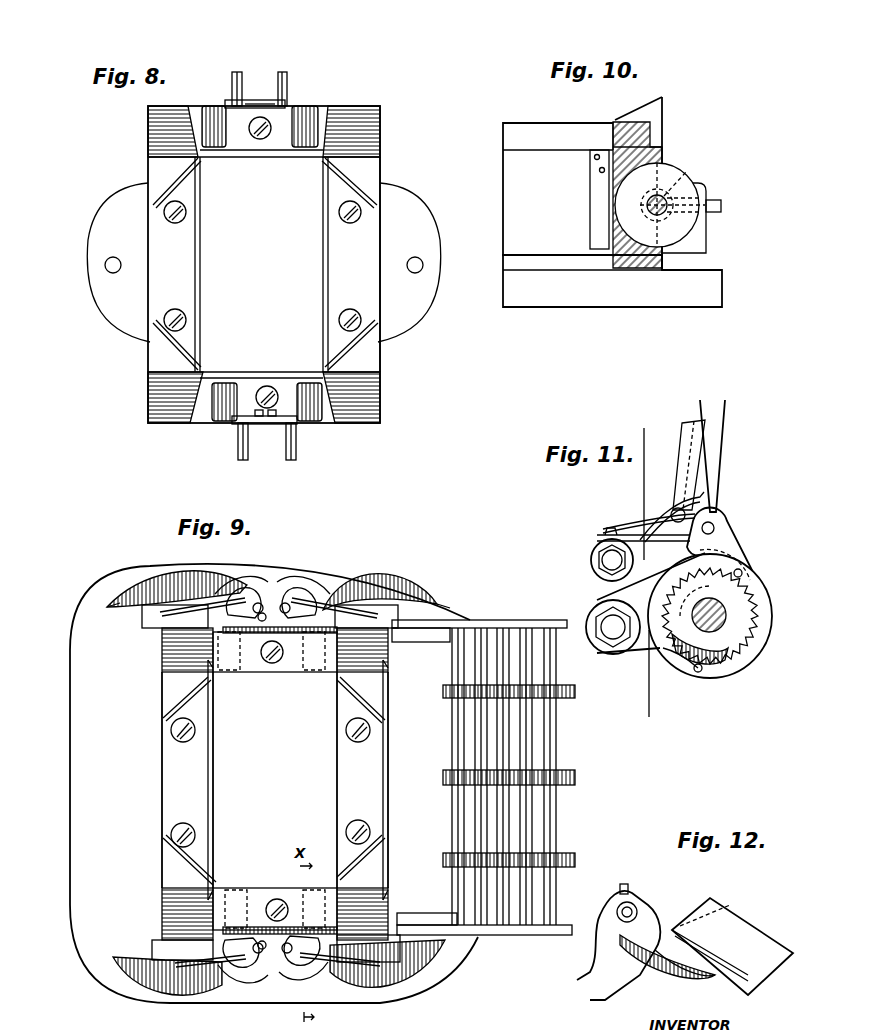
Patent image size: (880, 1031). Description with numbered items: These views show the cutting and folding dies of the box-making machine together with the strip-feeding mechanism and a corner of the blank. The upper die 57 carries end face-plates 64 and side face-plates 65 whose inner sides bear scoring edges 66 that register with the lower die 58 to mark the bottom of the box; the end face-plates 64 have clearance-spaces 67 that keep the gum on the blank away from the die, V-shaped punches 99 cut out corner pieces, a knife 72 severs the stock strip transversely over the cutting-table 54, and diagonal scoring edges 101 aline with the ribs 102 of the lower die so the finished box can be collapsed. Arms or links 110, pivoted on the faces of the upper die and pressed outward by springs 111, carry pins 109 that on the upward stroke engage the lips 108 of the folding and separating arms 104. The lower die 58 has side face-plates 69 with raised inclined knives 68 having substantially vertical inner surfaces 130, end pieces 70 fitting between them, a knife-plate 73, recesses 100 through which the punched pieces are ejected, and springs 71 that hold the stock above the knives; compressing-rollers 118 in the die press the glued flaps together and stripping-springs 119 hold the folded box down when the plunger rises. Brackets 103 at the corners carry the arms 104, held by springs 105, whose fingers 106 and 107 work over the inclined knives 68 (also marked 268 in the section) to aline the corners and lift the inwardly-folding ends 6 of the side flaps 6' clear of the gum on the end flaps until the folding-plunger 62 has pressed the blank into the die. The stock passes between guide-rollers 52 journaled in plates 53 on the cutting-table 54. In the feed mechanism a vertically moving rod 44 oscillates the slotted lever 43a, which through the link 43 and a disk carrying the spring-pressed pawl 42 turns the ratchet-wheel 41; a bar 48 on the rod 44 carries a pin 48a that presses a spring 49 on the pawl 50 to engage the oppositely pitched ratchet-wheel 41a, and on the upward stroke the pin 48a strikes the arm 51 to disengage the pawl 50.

In FIG. 8, the upper die 57 is at (261, 264).
In FIG. 8, the scoring edges 66 is at (322, 183).
In FIG. 8, the punches 99 is at (193, 110).
In FIG. 8, the clearance-spaces 67 is at (298, 108).
In FIG. 8, the end face-plates 64 is at (312, 108).
In FIG. 8, the pins 109 is at (278, 86).
In FIG. 8, the arms or links 110 is at (243, 110).
In FIG. 8, the springs 111 is at (261, 407).
In FIG. 8, the side face-plates 65 is at (398, 293).
In FIG. 8, the scoring edges 101 is at (165, 190).
In FIG. 8, the knife 72 is at (382, 174).
In FIG. 10, the side face-plates 69 is at (552, 130).
In FIG. 9, the side face-plates 69 is at (170, 806).
In FIG. 10, the stripping-springs 119 is at (596, 222).
In FIG. 9, the stripping-springs 119 is at (214, 880).
In FIG. 10, the end face-plates 70 is at (660, 142).
In FIG. 9, the end face-plates 70 is at (278, 672).
In FIG. 10, the inclined plate 268 is at (647, 108).
In FIG. 10, the vertical inner surfaces 130 is at (590, 124).
In FIG. 10, the compressing-rollers 118 is at (683, 180).
In FIG. 9, the compressing-rollers 118 is at (226, 672).
In FIG. 10, the lower die 58 is at (750, 162).
In FIG. 9, the lower die 58 is at (255, 783).
In FIG. 11, the rod 44 is at (714, 446).
In FIG. 11, the bar 48 is at (690, 434).
In FIG. 11, the pin 48a is at (678, 507).
In FIG. 11, the link 43 is at (733, 543).
In FIG. 11, the ratchet-wheel 41a is at (742, 645).
In FIG. 11, the ratchet-wheel 41 is at (718, 668).
In FIG. 11, the lever 43a is at (625, 604).
In FIG. 11, the pawl 50 is at (612, 541).
In FIG. 11, the spring 49 is at (655, 528).
In FIG. 11, the bracket or arm 51 is at (660, 503).
In FIG. 11, the spring-pressed pawl 42 is at (692, 673).
In FIG. 9, the inclined knives 68 is at (162, 651).
In FIG. 9, the recesses 100 is at (340, 640).
In FIG. 9, the ribs 102 is at (178, 707).
In FIG. 9, the knife-plate 73 is at (388, 840).
In FIG. 9, the finger 107 is at (148, 612).
In FIG. 12, the finger 107 is at (672, 926).
In FIG. 9, the folding and separating arms 104 is at (160, 575).
In FIG. 12, the folding and separating arms 104 is at (627, 955).
In FIG. 9, the finger 106 is at (118, 582).
In FIG. 12, the finger 106 is at (695, 975).
In FIG. 9, the springs 105 is at (208, 596).
In FIG. 9, the brackets or standards 103 is at (305, 587).
In FIG. 12, the brackets or standards 103 is at (588, 964).
In FIG. 9, the lips 108 is at (264, 592).
In FIG. 12, the lips 108 is at (628, 890).
In FIG. 9, the springs 71 is at (276, 975).
In FIG. 9, the plates 53 is at (483, 622).
In FIG. 9, the guide-rollers 52 is at (450, 700).
In FIG. 9, the cutting-table 54 is at (423, 717).
In FIG. 12, the inwardly-folding ends 6 is at (732, 946).
In FIG. 12, the folding-plunger 62 is at (718, 881).
In FIG. 12, the side flaps 6' is at (748, 1005).